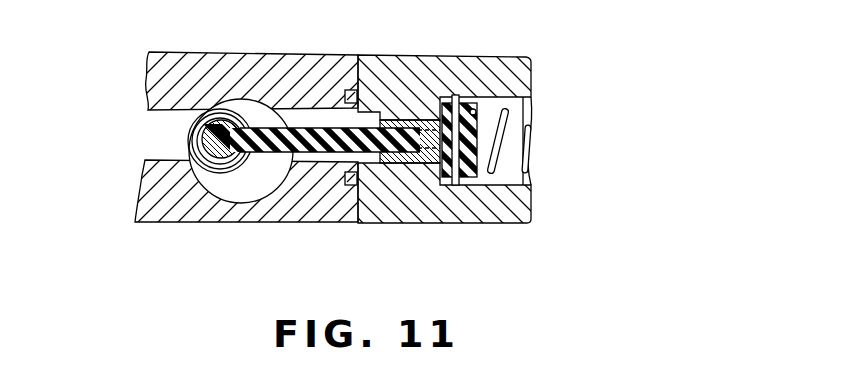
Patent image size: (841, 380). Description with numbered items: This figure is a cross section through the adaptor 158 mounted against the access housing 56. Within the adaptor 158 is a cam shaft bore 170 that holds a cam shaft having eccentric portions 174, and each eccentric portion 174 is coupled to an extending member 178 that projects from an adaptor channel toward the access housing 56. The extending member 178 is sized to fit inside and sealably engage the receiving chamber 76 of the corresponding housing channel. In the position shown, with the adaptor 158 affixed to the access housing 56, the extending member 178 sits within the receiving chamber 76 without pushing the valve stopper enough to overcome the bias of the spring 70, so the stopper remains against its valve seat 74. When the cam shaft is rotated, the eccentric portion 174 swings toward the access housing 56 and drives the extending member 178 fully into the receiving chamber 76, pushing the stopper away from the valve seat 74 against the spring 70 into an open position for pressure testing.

The adaptor 158 is at (153, 75).
The access housing 56 is at (372, 93).
The cam shaft bore 170 is at (203, 176).
The eccentric portion 174 is at (202, 136).
The extending member 178 is at (417, 120).
The receiving chamber 76 is at (355, 165).
The valve seat 74 is at (441, 171).
The spring 70 is at (477, 148).